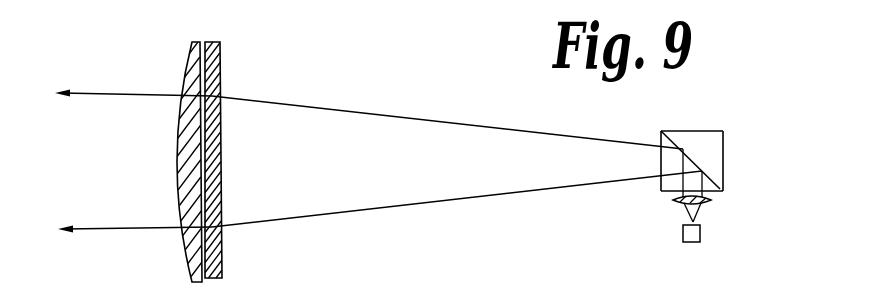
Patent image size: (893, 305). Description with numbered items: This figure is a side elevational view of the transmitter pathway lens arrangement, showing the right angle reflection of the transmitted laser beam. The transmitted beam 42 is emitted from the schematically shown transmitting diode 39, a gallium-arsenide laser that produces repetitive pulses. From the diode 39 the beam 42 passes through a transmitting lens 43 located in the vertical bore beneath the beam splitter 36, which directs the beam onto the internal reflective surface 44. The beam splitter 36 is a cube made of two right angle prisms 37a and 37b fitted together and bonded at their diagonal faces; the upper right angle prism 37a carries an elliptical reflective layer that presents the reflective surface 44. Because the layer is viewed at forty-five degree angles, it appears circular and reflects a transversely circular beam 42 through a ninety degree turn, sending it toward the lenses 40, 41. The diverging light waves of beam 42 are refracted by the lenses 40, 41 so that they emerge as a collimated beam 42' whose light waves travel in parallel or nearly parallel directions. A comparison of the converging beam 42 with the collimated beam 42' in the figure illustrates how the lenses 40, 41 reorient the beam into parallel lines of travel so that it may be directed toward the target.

The beam splitter 36 is at (693, 168).
The upper right angle prism 37a is at (712, 88).
The right angle prism 37b is at (662, 160).
The transmitting diode 39 is at (692, 243).
The lens 40 is at (215, 72).
The lens 41 is at (186, 62).
The transmitted beam 42 is at (457, 165).
The collimated beam 42' is at (133, 135).
The transmitting lens 43 is at (708, 202).
The reflective surface 44 is at (697, 163).